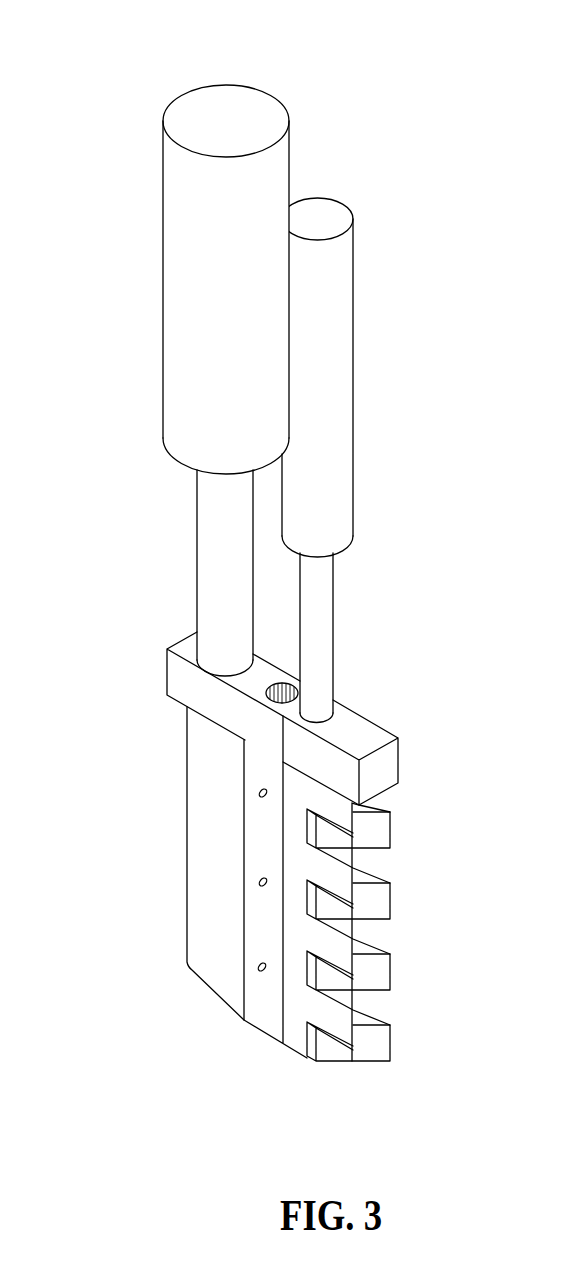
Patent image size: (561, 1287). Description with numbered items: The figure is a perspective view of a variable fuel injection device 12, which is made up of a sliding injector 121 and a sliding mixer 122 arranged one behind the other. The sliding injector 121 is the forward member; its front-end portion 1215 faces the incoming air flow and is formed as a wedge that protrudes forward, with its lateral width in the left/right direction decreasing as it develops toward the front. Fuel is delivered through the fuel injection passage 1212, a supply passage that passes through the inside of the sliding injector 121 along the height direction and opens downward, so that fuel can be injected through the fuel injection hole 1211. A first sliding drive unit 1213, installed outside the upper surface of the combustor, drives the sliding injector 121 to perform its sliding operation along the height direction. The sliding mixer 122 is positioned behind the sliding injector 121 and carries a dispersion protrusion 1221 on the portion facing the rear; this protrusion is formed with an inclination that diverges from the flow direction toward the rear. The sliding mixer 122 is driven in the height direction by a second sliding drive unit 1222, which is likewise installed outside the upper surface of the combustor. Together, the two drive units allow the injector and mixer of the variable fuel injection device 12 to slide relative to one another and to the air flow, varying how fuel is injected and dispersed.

The variable fuel injection device 12 is at (420, 56).
The sliding injector 121 is at (131, 179).
The fuel injection hole 1211 is at (258, 882).
The fuel injection passage 1212 is at (284, 691).
The first sliding drive unit 1213 is at (163, 275).
The front-end portion 1215 is at (218, 969).
The sliding mixer 122 is at (374, 277).
The dispersion protrusion 1221 is at (373, 947).
The second sliding drive unit 1222 is at (353, 375).